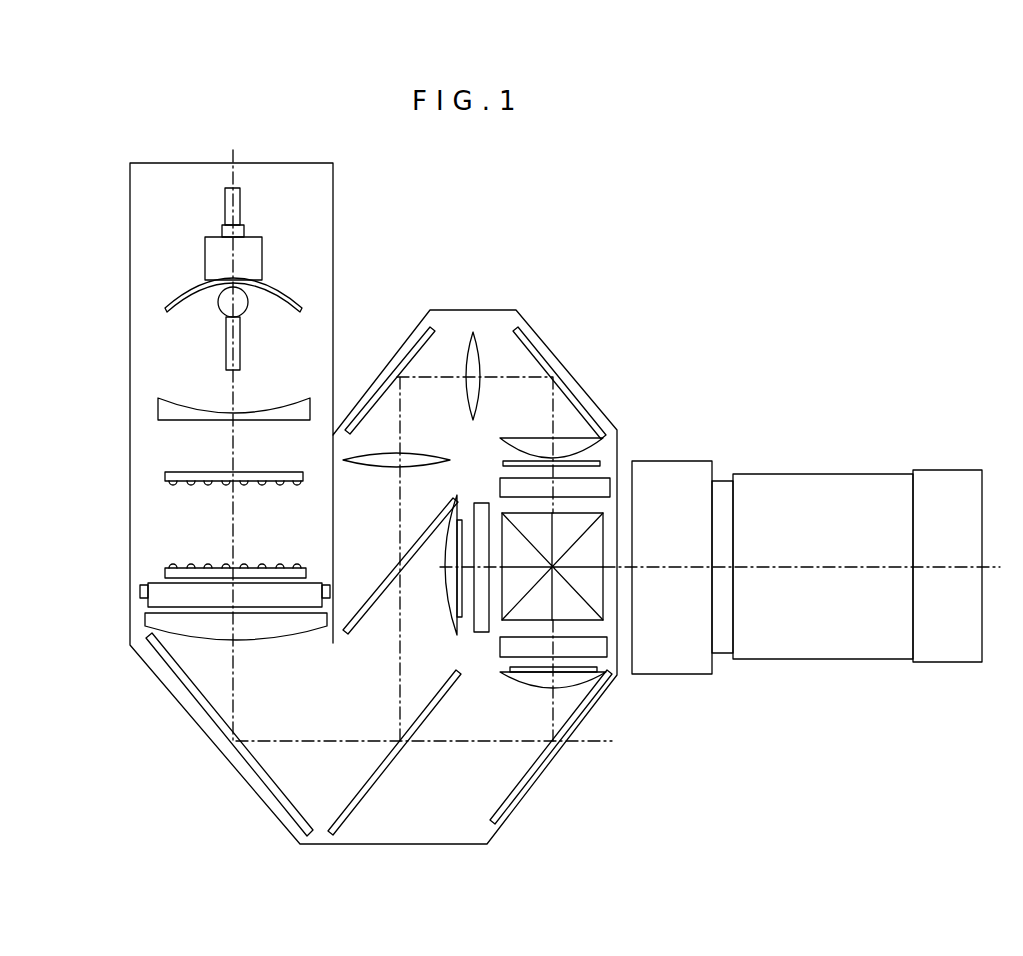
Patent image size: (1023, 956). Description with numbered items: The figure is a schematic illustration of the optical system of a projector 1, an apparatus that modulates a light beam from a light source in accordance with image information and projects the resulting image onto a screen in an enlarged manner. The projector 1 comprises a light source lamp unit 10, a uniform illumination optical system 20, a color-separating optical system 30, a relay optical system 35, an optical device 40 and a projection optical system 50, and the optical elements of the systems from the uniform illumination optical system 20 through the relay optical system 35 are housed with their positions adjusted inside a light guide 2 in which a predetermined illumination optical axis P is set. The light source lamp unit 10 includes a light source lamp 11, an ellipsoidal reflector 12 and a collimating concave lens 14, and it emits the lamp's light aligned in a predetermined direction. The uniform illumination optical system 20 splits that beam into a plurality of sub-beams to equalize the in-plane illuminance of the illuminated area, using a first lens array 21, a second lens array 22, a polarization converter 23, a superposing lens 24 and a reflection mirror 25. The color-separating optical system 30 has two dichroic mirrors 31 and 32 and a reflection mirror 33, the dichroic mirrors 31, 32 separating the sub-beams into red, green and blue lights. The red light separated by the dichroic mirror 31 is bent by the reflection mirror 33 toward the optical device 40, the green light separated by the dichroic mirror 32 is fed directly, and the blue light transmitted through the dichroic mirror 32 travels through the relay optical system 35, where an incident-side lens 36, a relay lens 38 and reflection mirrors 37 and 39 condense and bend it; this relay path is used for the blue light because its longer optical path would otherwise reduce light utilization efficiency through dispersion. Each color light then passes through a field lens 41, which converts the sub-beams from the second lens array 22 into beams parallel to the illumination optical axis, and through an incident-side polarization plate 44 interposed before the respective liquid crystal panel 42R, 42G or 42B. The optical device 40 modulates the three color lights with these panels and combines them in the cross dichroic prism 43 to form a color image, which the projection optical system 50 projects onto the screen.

The projector 1 is at (808, 291).
The light guide 2 is at (571, 368).
The light source lamp unit 10 is at (180, 269).
The light source lamp 11 is at (219, 302).
The ellipsoidal reflector 12 is at (164, 301).
The collimating concave lens 14 is at (157, 403).
The uniform illumination optical system 20 is at (178, 518).
The first lens array 21 is at (165, 477).
The second lens array 22 is at (165, 570).
The polarization converter 23 is at (148, 596).
The superposing lens 24 is at (150, 620).
The reflection mirror 25 is at (221, 731).
The color-separating optical system 30 is at (433, 795).
The dichroic mirror 31 is at (363, 796).
The dichroic mirror 32 is at (353, 629).
The reflection mirror 33 is at (536, 774).
The relay optical system 35 is at (494, 341).
The incident-side lens 36 is at (384, 453).
The reflection mirror 37 is at (420, 338).
The relay lens 38 is at (472, 333).
The reflection mirror 39 is at (529, 343).
The optical device 40 is at (613, 669).
The field lens 41 is at (530, 442).
The liquid crystal panel 42G is at (480, 502).
The liquid crystal panel 42B is at (610, 482).
The liquid crystal panel 42R is at (608, 647).
The cross dichroic prism 43 is at (605, 530).
The incident-side polarization plate 44 is at (602, 463).
The projection optical system 50 is at (840, 439).
The illumination optical axis P is at (324, 740).